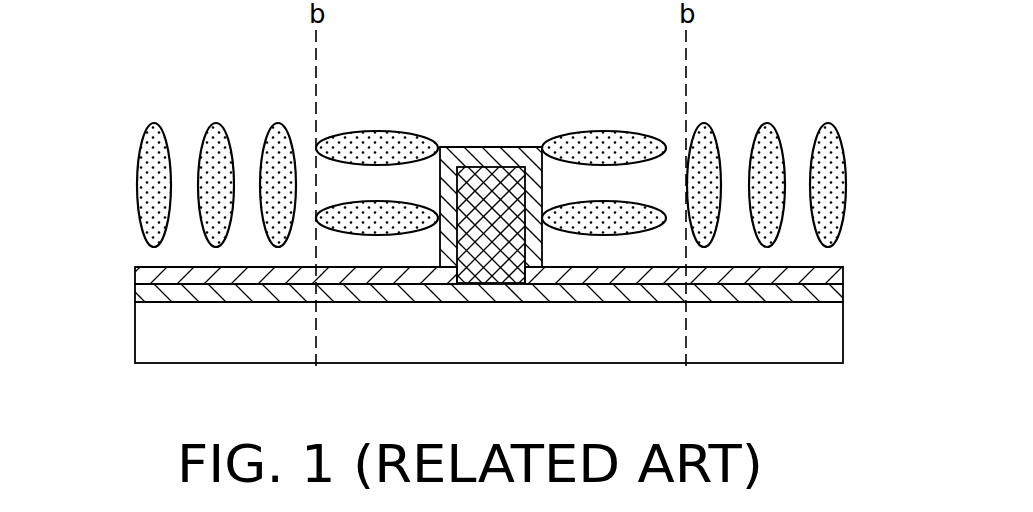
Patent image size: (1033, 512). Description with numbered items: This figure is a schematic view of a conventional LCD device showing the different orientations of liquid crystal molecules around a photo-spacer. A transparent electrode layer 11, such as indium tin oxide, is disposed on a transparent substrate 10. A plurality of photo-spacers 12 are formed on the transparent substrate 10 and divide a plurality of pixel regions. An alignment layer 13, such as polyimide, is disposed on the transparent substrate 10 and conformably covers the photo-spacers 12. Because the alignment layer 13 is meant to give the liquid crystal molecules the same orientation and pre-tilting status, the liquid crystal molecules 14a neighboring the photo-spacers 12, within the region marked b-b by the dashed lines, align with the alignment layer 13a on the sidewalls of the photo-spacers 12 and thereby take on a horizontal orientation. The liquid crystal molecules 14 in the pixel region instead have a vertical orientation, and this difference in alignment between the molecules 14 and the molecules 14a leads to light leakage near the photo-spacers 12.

The transparent substrate 10 is at (827, 330).
The transparent electrode layer 11 is at (827, 288).
The photo-spacer 12 is at (491, 187).
The alignment layer 13 is at (143, 275).
The alignment layer on sidewalls of the photo-spacers 13a is at (460, 147).
The liquid crystal molecules 14 is at (148, 185).
The liquid crystal molecules neighboring the photo-spacers 14a is at (378, 147).